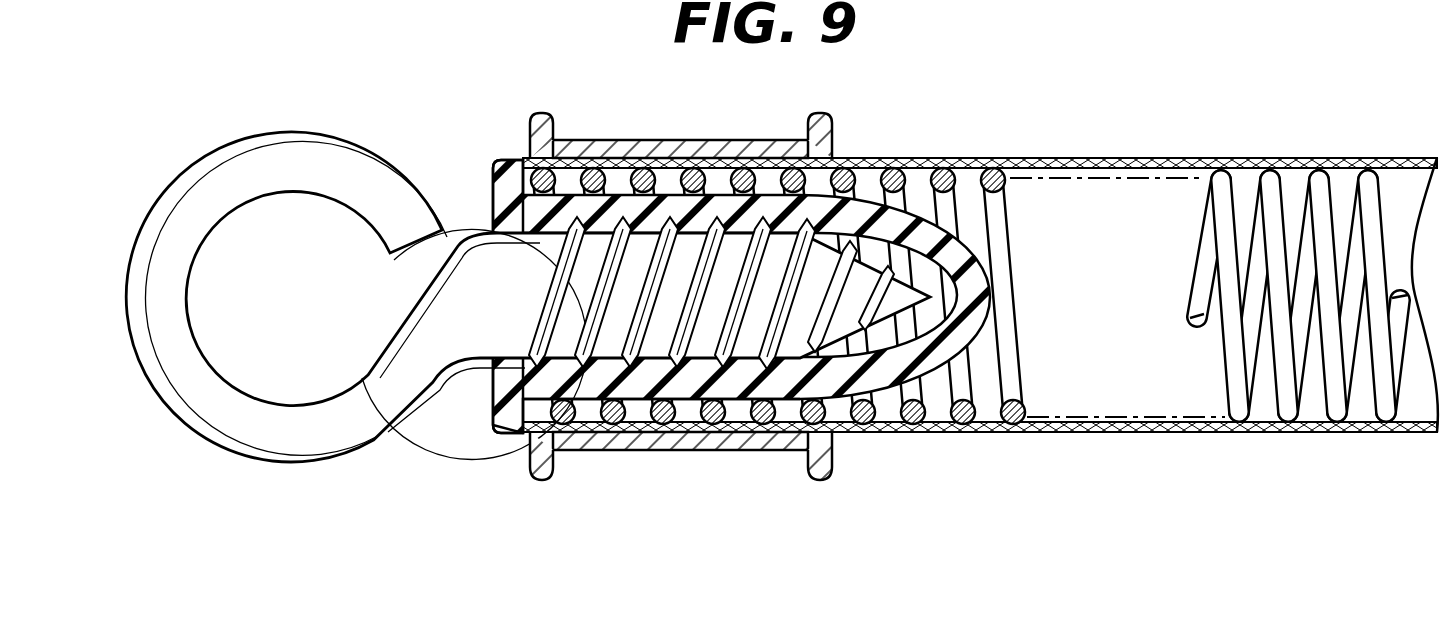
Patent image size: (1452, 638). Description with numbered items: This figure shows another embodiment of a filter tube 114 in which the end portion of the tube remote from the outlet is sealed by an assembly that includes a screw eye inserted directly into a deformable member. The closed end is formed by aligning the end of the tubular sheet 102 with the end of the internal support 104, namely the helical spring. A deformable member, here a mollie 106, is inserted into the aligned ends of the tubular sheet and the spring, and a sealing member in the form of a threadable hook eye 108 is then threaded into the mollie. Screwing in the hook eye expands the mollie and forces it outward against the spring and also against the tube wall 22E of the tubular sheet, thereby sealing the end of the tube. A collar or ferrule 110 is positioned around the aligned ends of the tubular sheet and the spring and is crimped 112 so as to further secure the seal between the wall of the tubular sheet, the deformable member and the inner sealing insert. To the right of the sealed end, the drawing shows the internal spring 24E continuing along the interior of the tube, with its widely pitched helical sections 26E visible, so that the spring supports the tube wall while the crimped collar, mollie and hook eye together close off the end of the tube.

The tubular sheet 102 is at (527, 157).
The internal support 104 is at (532, 435).
The mollie 106 is at (500, 207).
The threadable hook eye 108 is at (221, 443).
The collar or ferrule 110 is at (541, 478).
The crimp 112 is at (668, 452).
The filter tube 114 is at (978, 137).
The tube wall 22E is at (1082, 158).
The internal spring 24E is at (1203, 208).
The helical sections 26E is at (1027, 391).